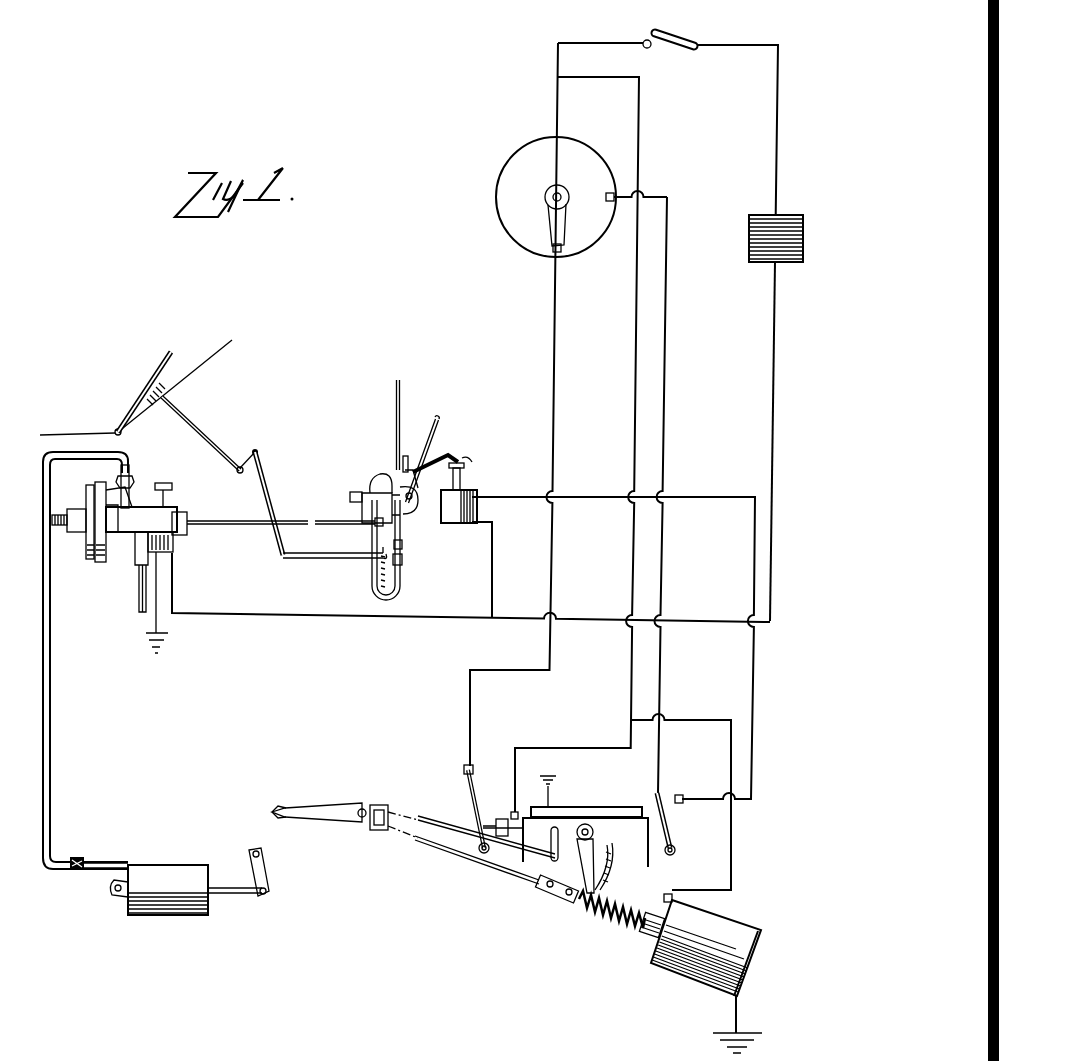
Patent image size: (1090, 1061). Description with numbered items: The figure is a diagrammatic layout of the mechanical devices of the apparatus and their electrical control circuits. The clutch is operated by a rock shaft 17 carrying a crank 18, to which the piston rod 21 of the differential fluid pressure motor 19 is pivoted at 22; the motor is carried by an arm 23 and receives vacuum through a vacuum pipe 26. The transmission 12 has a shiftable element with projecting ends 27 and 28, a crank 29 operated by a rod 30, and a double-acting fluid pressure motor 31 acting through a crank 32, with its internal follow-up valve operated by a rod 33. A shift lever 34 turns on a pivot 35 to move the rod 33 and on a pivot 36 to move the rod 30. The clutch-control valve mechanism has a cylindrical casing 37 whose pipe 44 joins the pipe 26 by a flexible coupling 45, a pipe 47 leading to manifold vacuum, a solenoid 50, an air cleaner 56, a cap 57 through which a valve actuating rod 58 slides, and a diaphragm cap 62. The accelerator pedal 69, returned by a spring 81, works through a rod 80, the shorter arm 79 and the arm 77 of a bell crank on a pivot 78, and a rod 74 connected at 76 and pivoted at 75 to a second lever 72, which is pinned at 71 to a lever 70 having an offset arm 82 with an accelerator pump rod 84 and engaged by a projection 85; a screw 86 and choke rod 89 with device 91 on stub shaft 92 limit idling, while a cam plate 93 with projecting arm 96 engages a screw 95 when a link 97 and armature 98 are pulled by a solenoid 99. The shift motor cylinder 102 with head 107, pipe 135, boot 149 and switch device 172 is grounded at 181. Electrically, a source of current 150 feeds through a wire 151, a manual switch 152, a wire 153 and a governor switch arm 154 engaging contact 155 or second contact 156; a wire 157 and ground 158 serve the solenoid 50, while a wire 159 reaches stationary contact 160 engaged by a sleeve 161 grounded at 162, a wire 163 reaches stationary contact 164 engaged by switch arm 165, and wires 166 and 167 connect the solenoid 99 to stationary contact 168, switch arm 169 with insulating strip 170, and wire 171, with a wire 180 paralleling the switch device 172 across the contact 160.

The transmission 12 is at (597, 806).
The rock shaft 17 is at (261, 852).
The crank 18 is at (265, 868).
The differential fluid pressure motor 19 is at (148, 915).
The piston rod 21 is at (246, 893).
The pivot 22 is at (265, 894).
The arm 23 is at (119, 896).
The vacuum pipe 26 is at (100, 862).
The projecting end of shiftable element 27 is at (486, 808).
The projecting end of shiftable element 28 is at (668, 864).
The crank 29 is at (560, 858).
The rod 30 is at (458, 840).
The double-acting fluid pressure motor 31 is at (686, 976).
The crank 32 is at (540, 890).
The rod 33 is at (500, 864).
The shift lever 34 is at (346, 822).
The pivot 35 is at (360, 808).
The pivot 36 is at (381, 805).
The cylindrical casing 37 is at (123, 545).
The pipe 44 is at (129, 456).
The flexible coupling 45 is at (78, 857).
The pipe 47 is at (138, 598).
The solenoid 50 is at (174, 541).
The air cleaner 56 is at (168, 483).
The cap 57 is at (181, 511).
The valve actuating rod 58 is at (332, 522).
The cap 62 is at (89, 552).
The accelerator pedal 69 is at (160, 366).
The lever 70 is at (403, 559).
The pivot 71 is at (398, 594).
The second lever 72 is at (371, 543).
The rod 74 is at (317, 561).
The pivot 75 is at (380, 563).
The connection 76 is at (284, 558).
The arm of bell crank lever 77 is at (273, 492).
The pivot 78 is at (258, 451).
The shorter arm of bell crank lever 79 is at (242, 477).
The rod 80 is at (212, 444).
The spring 81 is at (165, 375).
The offset arm 82 is at (406, 511).
The rod 84 is at (438, 433).
The projection 85 is at (364, 485).
The screw 86 is at (380, 478).
The rod 89 is at (399, 410).
The device 91 is at (406, 458).
The stub shaft 92 is at (412, 496).
The cam plate 93 is at (455, 463).
The screw 95 is at (358, 492).
The projecting arm 96 is at (470, 457).
The link 97 is at (462, 474).
The armature 98 is at (477, 482).
The solenoid 99 is at (404, 544).
The cylinder 102 is at (746, 928).
The head 107 is at (647, 938).
The pipe 135 is at (615, 858).
The boot 149 is at (625, 925).
The source of current 150 is at (785, 213).
The wire 151 is at (777, 121).
The manual switch 152 is at (688, 33).
The wire 153 is at (590, 43).
The switch arm 154 is at (546, 193).
The contact 155 is at (552, 253).
The second contact 156 is at (607, 197).
The wire 157 is at (771, 333).
The ground 158 is at (166, 648).
The wire 159 is at (634, 345).
The stationary contact 160 is at (516, 811).
The sleeve 161 is at (506, 805).
The ground 162 is at (548, 786).
The wire 163 is at (553, 390).
The stationary contact 164 is at (462, 765).
The switch arm 165 is at (473, 791).
The wire 166 is at (491, 555).
The wire 167 is at (503, 497).
The stationary contact 168 is at (680, 795).
The switch arm 169 is at (673, 839).
The insulating strip 170 is at (669, 815).
The wire 171 is at (662, 560).
The switch device 172 is at (662, 898).
The wire 180 is at (733, 857).
The ground 181 is at (745, 1033).